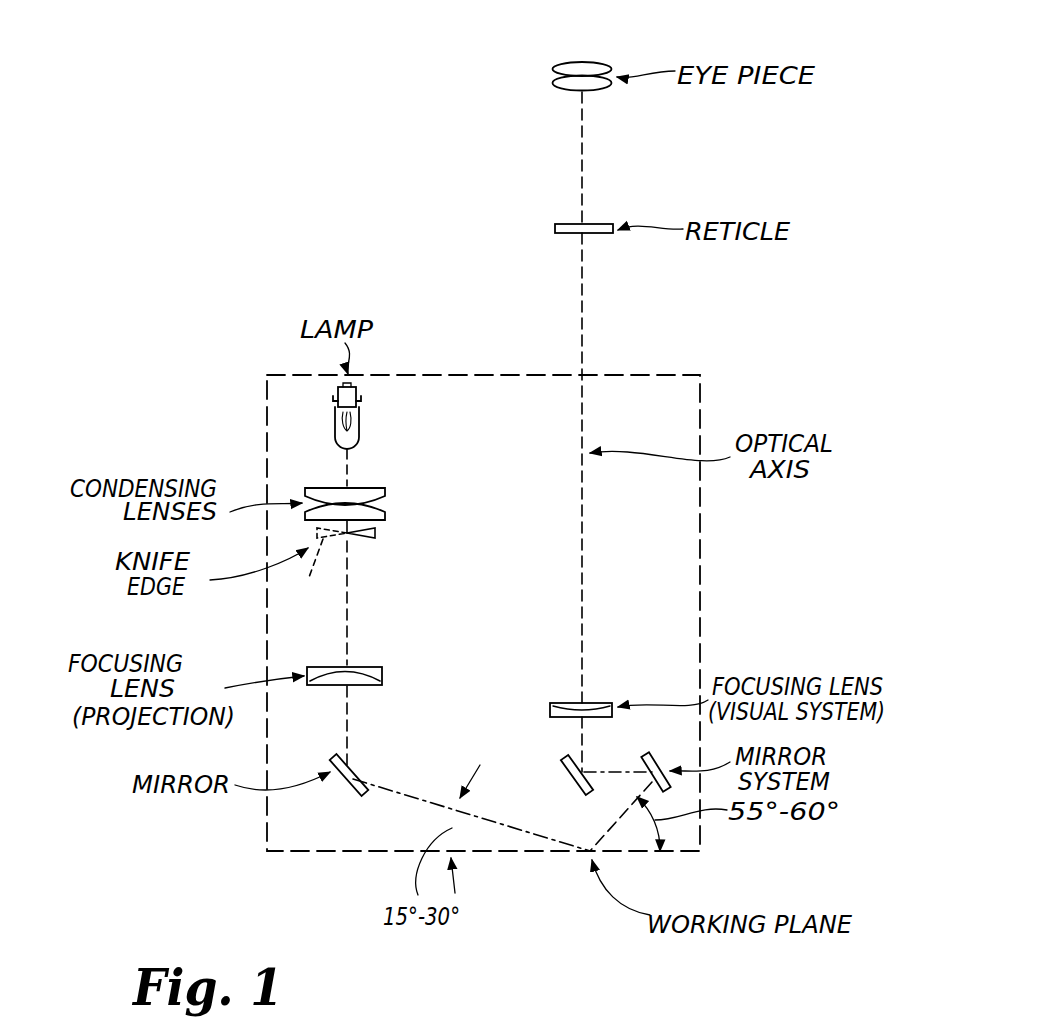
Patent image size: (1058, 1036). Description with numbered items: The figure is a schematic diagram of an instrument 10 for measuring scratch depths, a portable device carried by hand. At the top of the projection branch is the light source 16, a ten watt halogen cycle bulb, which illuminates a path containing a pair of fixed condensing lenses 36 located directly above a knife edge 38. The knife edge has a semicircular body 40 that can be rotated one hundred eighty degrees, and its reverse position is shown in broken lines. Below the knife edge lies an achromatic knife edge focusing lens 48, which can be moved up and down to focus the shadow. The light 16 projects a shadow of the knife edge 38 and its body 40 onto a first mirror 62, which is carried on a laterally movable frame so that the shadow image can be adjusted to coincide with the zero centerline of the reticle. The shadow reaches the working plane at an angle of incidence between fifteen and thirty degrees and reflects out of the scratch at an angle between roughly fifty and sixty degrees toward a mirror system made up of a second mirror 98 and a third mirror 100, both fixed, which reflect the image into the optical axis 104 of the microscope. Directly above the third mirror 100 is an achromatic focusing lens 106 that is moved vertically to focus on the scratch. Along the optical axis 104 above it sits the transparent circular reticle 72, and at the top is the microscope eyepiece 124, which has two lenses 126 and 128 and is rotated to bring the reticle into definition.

The instrument 10 is at (281, 859).
The light source 16 is at (360, 438).
The condensing lenses 36 is at (388, 499).
The knife edge 38 is at (350, 538).
The semicircular body 40 is at (378, 535).
The knife edge focusing lens 48 is at (385, 675).
The first mirror 62 is at (360, 797).
The reticle 72 is at (604, 222).
The second mirror 98 is at (660, 760).
The third mirror 100 is at (563, 762).
The optical axis 104 is at (585, 618).
The focusing lens 106 is at (613, 703).
The microscope eyepiece 124 is at (612, 82).
The eyepiece lens 126 is at (578, 63).
The eyepiece lens 128 is at (570, 88).